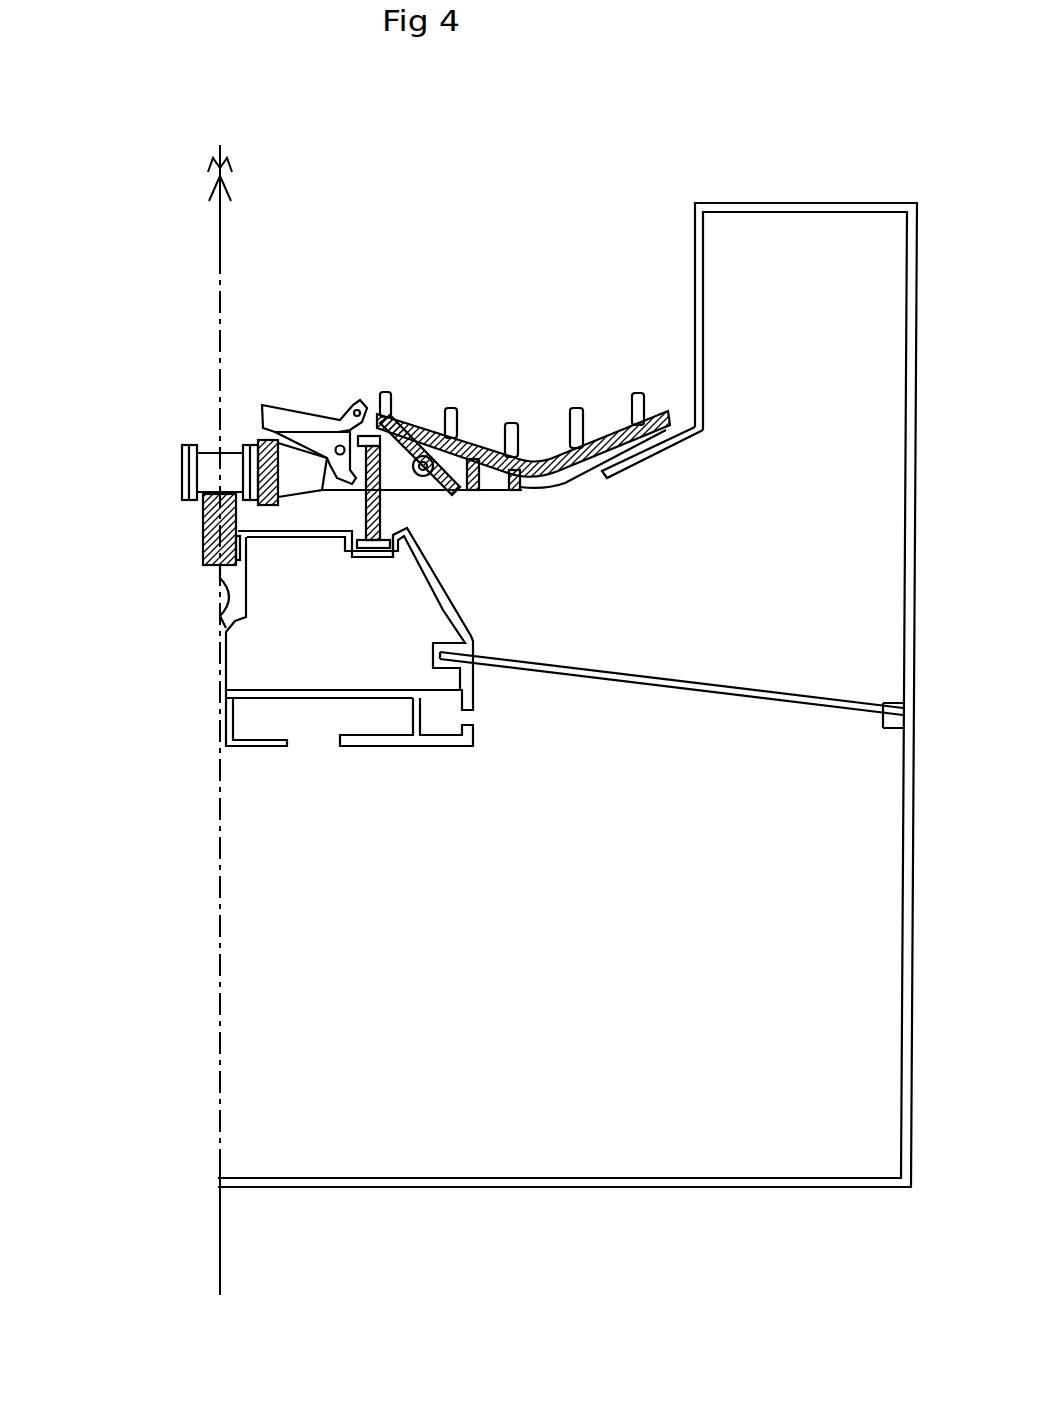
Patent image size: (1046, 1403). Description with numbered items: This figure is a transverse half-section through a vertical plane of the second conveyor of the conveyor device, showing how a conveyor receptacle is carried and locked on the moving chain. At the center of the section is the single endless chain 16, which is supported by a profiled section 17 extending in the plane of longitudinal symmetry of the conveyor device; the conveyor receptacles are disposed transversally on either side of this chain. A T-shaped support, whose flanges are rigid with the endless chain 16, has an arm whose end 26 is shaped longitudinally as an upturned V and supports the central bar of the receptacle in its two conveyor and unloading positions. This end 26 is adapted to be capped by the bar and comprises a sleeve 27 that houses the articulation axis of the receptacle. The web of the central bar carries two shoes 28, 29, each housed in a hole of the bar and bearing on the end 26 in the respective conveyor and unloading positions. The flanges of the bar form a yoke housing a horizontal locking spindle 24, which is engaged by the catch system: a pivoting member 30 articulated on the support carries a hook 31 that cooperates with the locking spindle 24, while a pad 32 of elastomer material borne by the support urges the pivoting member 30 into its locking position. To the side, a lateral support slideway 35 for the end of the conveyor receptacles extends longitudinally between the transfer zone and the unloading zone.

The endless chain 16 is at (187, 464).
The profiled section 17 is at (205, 538).
The locking spindle 24 is at (376, 415).
The end of the support 26 is at (398, 537).
The sleeve 27 is at (423, 478).
The shoe 28 is at (415, 440).
The shoe 29 is at (466, 442).
The pivoting member 30 is at (288, 420).
The hook 31 is at (343, 420).
The pad 32 is at (365, 478).
The lateral support slideway 35 is at (663, 447).